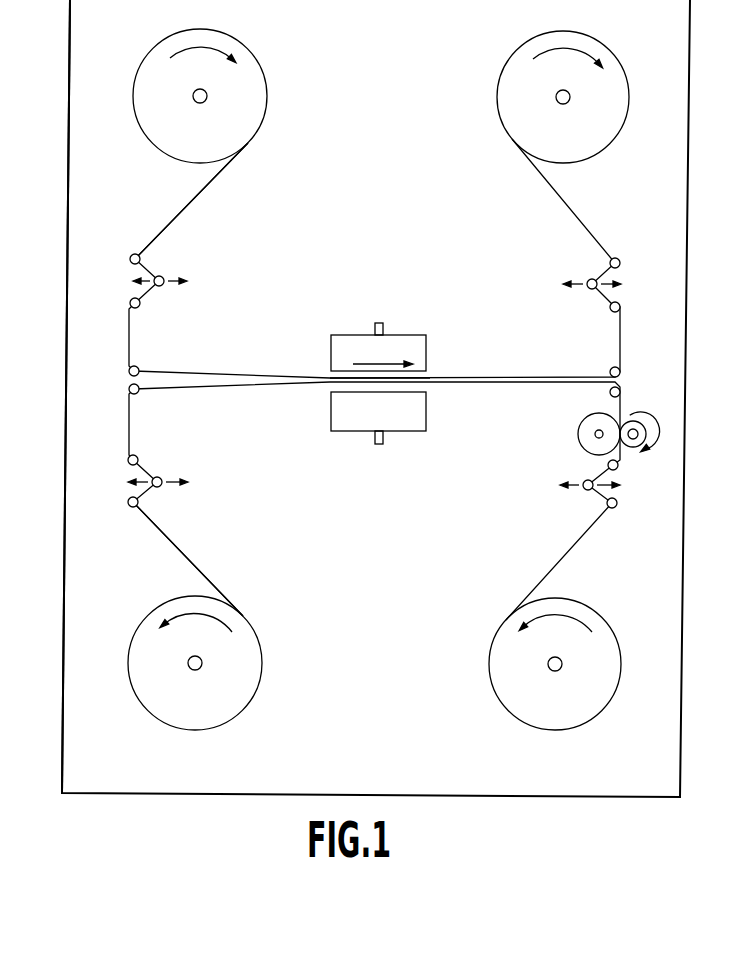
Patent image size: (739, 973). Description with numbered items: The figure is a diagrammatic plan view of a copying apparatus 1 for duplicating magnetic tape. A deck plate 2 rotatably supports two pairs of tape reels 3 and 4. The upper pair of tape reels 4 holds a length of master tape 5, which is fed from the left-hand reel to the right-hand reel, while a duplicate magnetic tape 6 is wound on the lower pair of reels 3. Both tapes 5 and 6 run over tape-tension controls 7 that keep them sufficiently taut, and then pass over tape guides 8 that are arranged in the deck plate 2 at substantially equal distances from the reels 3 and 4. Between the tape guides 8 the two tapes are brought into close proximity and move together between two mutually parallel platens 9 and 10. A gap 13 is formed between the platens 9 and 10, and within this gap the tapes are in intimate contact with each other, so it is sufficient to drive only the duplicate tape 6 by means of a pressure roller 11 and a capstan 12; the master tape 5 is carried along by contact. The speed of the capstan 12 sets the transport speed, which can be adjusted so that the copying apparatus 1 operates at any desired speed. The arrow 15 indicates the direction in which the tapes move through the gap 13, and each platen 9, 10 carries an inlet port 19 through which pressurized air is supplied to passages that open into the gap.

The copying apparatus 1 is at (57, 557).
The deck plate 2 is at (94, 793).
The tape reels 3 is at (228, 707).
The tape reels 4 is at (228, 133).
The master tape 5 is at (205, 187).
The duplicate magnetic tape 6 is at (187, 557).
The tape-tension controls 7 is at (168, 274).
The tape guides 8 is at (138, 367).
The platen 9 is at (420, 358).
The platen 10 is at (415, 424).
The pressure roller 11 is at (587, 436).
The capstan 12 is at (634, 420).
The gap 13 is at (388, 386).
The arrow 15 is at (372, 362).
The inlet port 19 is at (384, 326).